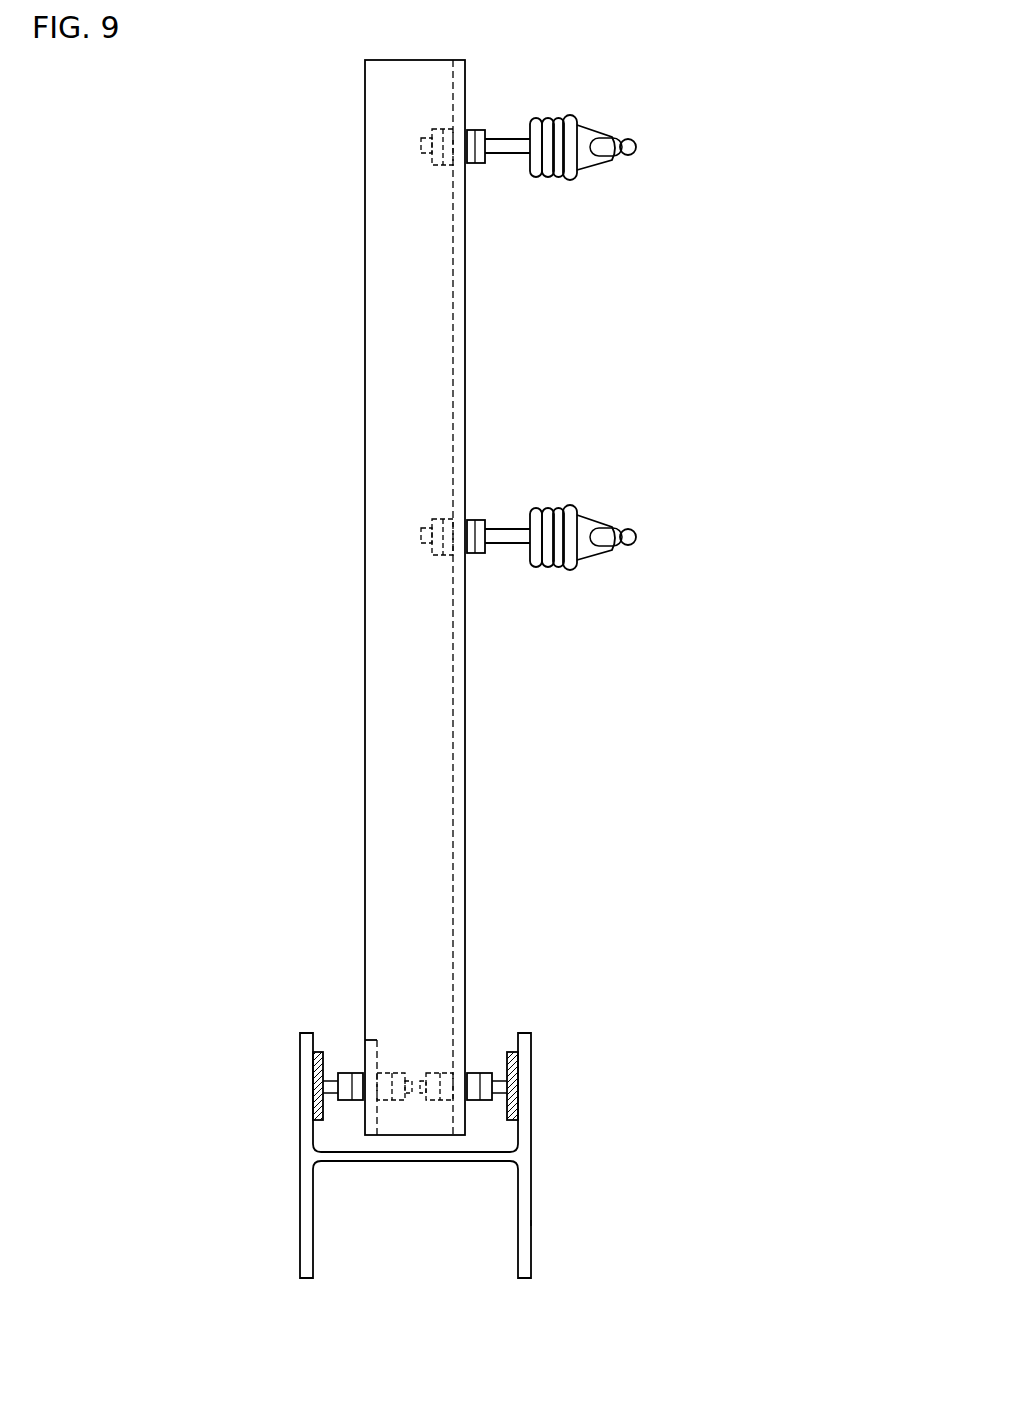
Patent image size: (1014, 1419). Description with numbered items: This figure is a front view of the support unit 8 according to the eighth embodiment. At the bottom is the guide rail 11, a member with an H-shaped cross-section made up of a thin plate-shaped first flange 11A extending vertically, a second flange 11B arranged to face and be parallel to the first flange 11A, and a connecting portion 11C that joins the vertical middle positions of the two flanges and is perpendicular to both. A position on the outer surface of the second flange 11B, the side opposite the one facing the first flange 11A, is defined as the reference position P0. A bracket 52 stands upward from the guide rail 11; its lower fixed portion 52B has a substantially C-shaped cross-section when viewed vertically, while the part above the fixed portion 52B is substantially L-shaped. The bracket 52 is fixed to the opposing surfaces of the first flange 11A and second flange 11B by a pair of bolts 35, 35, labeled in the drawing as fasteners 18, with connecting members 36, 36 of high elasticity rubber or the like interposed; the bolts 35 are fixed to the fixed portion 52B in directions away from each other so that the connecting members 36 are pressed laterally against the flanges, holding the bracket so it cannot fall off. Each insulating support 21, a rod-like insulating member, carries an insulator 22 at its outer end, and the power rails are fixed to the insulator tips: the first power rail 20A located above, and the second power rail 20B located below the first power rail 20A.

The support unit 8 is at (187, 182).
The bracket 52 is at (378, 100).
The fixed portion 52B is at (377, 1040).
The insulating support 21 is at (588, 90).
The insulator 22 is at (537, 178).
The first power rail 20A is at (628, 155).
The second power rail 20B is at (628, 545).
The bolt 35 is at (408, 1028).
The fastener 18 is at (345, 1073).
The connecting member 36 is at (317, 1090).
The guide rail 11 is at (401, 1171).
The first flange 11A is at (307, 1157).
The second flange 11B is at (525, 1262).
The connecting portion 11C is at (490, 1157).
The reference position P0 is at (533, 1223).